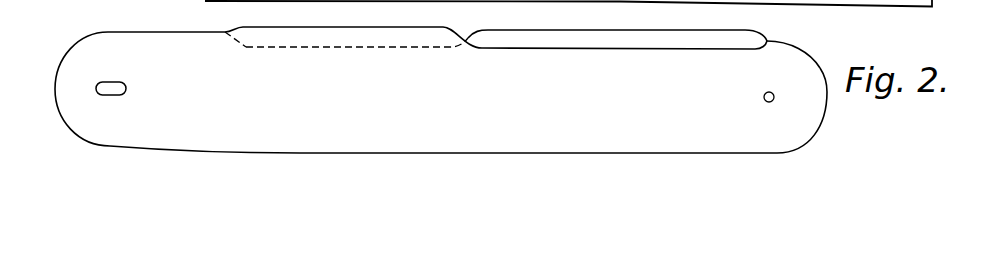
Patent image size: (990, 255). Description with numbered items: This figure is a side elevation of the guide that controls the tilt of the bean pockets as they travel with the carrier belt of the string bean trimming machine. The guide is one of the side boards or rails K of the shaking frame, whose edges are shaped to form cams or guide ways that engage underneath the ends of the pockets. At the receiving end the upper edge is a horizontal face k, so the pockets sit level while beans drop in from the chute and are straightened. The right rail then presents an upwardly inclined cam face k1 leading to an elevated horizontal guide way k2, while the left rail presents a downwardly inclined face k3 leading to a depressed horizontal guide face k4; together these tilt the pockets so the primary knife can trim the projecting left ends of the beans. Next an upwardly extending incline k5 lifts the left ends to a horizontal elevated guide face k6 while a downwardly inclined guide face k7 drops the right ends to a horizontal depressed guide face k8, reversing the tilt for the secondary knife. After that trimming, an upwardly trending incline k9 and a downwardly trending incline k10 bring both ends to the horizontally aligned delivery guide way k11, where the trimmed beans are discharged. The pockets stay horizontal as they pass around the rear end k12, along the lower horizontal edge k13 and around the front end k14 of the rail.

The side rail K is at (576, 113).
The horizontal receiving guide face k is at (155, 58).
The upwardly inclined cam face k1 is at (227, 31).
The elevated horizontal guide way k2 is at (308, 27).
The downwardly inclined face k3 is at (247, 46).
The depressed horizontal guide face k4 is at (333, 48).
The upwardly extending incline k5 is at (473, 34).
The horizontal elevated guide face k6 is at (567, 29).
The downwardly inclined guide face k7 is at (473, 48).
The horizontal depressed guide face k8 is at (563, 50).
The upwardly trending incline k9 is at (745, 50).
The downwardly trending incline k10 is at (765, 34).
The delivery guide way k11 is at (796, 46).
The rear end of rail k12 is at (827, 108).
The lower horizontal edge k13 is at (432, 153).
The front end of rail k14 is at (56, 74).